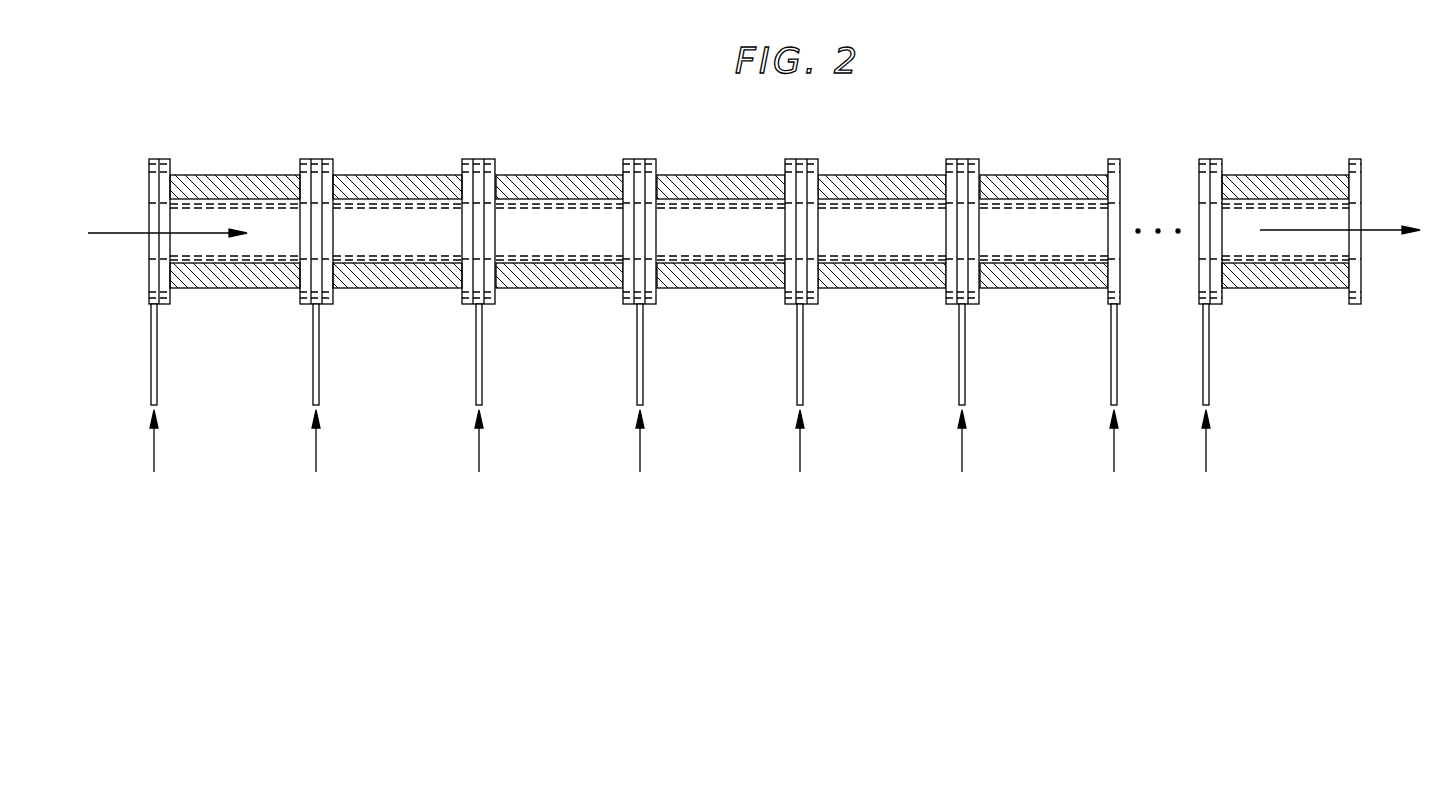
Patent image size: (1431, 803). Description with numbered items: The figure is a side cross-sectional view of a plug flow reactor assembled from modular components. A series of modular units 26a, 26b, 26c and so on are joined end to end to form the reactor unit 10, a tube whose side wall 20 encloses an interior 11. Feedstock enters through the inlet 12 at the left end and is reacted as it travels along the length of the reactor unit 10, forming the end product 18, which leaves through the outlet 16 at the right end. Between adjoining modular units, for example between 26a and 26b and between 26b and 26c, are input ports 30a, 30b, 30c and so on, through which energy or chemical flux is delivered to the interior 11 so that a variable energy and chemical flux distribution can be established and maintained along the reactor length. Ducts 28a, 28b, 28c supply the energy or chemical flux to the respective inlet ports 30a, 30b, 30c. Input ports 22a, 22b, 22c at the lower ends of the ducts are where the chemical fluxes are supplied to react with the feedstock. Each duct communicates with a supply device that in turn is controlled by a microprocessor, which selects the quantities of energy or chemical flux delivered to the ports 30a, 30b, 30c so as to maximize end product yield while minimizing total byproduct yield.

The reactor unit 10 is at (268, 176).
The interior 11 is at (582, 230).
The inlet 12 is at (180, 225).
The outlet 16 is at (1335, 222).
The end product 18 is at (1383, 235).
The side wall 20 is at (421, 288).
The input port 22a is at (152, 450).
The input port 22b is at (315, 432).
The input port 22c is at (477, 432).
The modular unit 26a is at (206, 185).
The modular unit 26b is at (380, 185).
The modular unit 26c is at (530, 180).
The duct 28a is at (158, 348).
The duct 28b is at (320, 348).
The duct 28c is at (483, 347).
The inlet port 30a is at (153, 164).
The input port 30b is at (316, 165).
The input port 30c is at (478, 164).